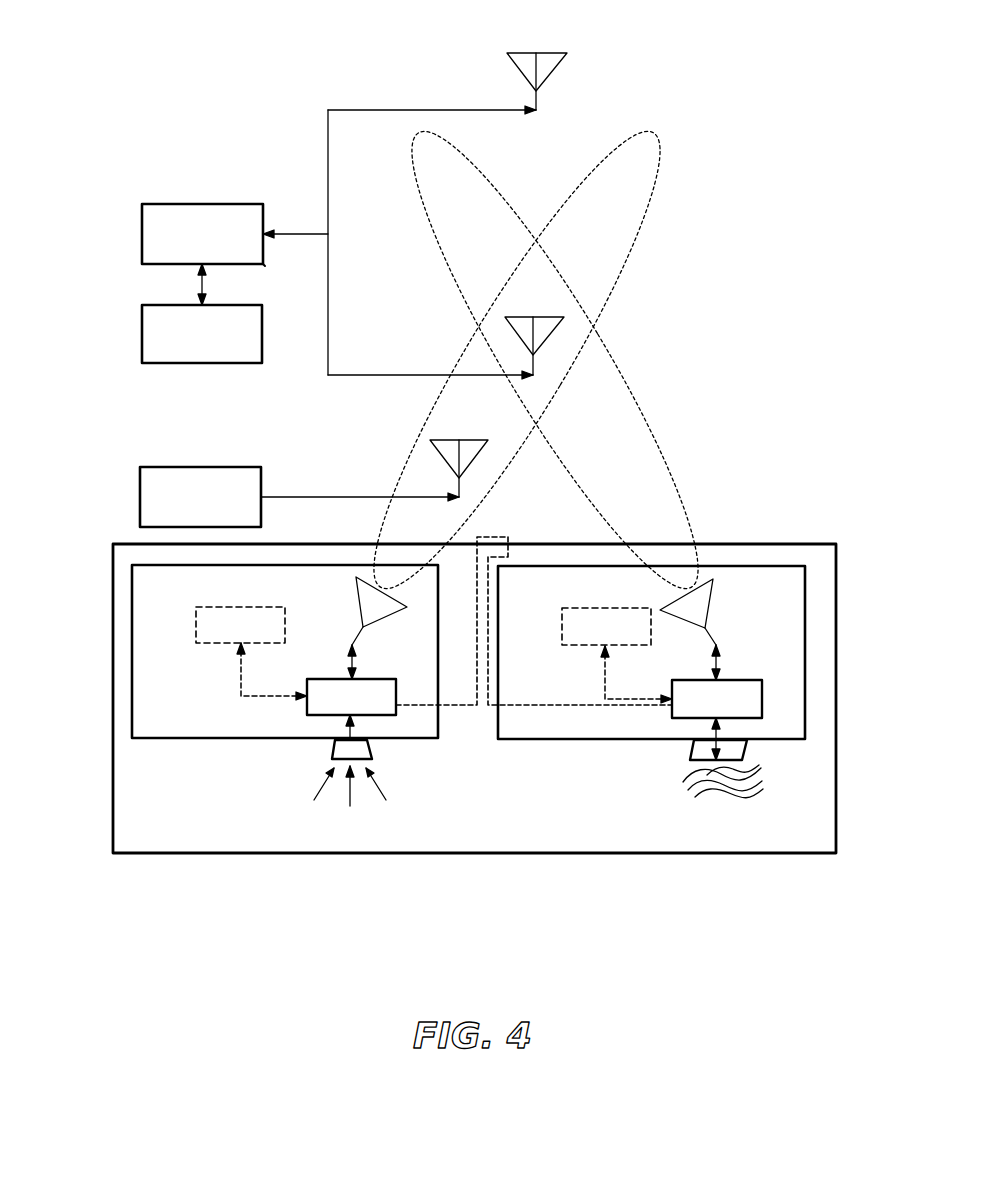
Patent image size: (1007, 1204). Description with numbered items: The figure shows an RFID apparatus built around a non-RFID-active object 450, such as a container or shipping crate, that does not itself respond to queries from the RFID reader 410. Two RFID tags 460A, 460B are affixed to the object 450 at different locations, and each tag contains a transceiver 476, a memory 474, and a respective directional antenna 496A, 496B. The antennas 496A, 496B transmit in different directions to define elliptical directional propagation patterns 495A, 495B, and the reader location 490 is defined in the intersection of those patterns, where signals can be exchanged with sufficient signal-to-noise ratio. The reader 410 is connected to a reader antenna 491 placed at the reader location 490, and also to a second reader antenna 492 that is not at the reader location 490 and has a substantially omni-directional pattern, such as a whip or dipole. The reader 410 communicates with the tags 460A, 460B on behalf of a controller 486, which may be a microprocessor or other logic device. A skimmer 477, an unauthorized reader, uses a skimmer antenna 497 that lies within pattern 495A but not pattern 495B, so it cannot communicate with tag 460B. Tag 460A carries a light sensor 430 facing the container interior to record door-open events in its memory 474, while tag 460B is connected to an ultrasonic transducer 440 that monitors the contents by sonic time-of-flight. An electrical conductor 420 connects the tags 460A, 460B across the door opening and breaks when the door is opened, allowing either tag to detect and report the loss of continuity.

The RFID reader 410 is at (142, 212).
The controller 486 is at (142, 312).
The skimmer 477 is at (142, 474).
The reader antenna 492 is at (535, 53).
The reader antenna 491 is at (533, 317).
The skimmer antenna 497 is at (460, 440).
The reader location 490 is at (638, 325).
The directional propagation pattern 495A is at (654, 215).
The directional propagation pattern 495B is at (654, 412).
The object 450 is at (470, 853).
The RFID tag 460A is at (181, 739).
The RFID tag 460B is at (587, 739).
The memory 474 is at (195, 616).
The transceiver 476 is at (307, 689).
The directional antenna 496A is at (356, 598).
The directional antenna 496B is at (715, 598).
The light sensor 430 is at (334, 748).
The ultrasonic transducer 440 is at (694, 749).
The electrical conductor 420 is at (455, 708).